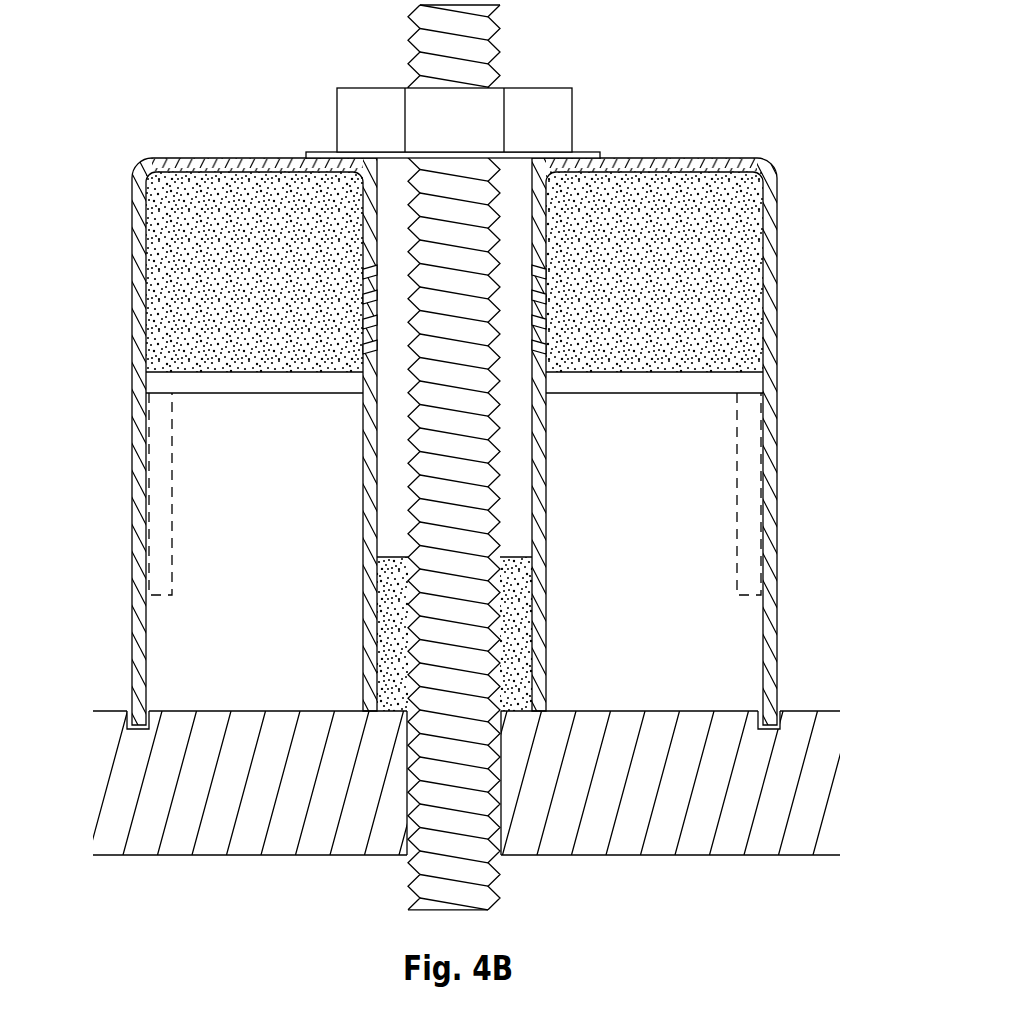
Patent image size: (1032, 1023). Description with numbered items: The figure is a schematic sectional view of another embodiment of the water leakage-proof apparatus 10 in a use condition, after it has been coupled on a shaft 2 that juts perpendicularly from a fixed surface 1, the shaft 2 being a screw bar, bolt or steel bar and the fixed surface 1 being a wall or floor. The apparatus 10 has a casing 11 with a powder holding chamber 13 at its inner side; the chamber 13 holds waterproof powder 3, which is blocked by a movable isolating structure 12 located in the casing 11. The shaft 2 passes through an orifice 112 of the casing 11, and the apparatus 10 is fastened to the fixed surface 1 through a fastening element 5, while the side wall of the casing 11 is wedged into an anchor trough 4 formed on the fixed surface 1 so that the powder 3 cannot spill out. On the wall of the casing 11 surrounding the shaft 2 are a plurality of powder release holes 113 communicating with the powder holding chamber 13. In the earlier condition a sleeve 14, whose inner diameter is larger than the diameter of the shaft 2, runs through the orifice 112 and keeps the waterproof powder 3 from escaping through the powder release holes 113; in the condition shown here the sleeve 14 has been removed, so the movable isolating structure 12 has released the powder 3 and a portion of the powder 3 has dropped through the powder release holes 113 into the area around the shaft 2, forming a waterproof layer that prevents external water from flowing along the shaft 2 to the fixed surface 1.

The fixed surface 1 is at (812, 785).
The shaft 2 is at (480, 38).
The waterproof powder 3 is at (230, 182).
The anchor trough 4 is at (128, 722).
The fastening element 5 is at (555, 108).
The water leakage-proof apparatus 10 is at (446, 389).
The casing 11 is at (775, 352).
The movable isolating structure 12 is at (170, 378).
The powder holding chamber 13 is at (178, 178).
The sleeve 14 is at (380, 156).
The orifice 112 is at (388, 513).
The powder release holes 113 is at (370, 265).